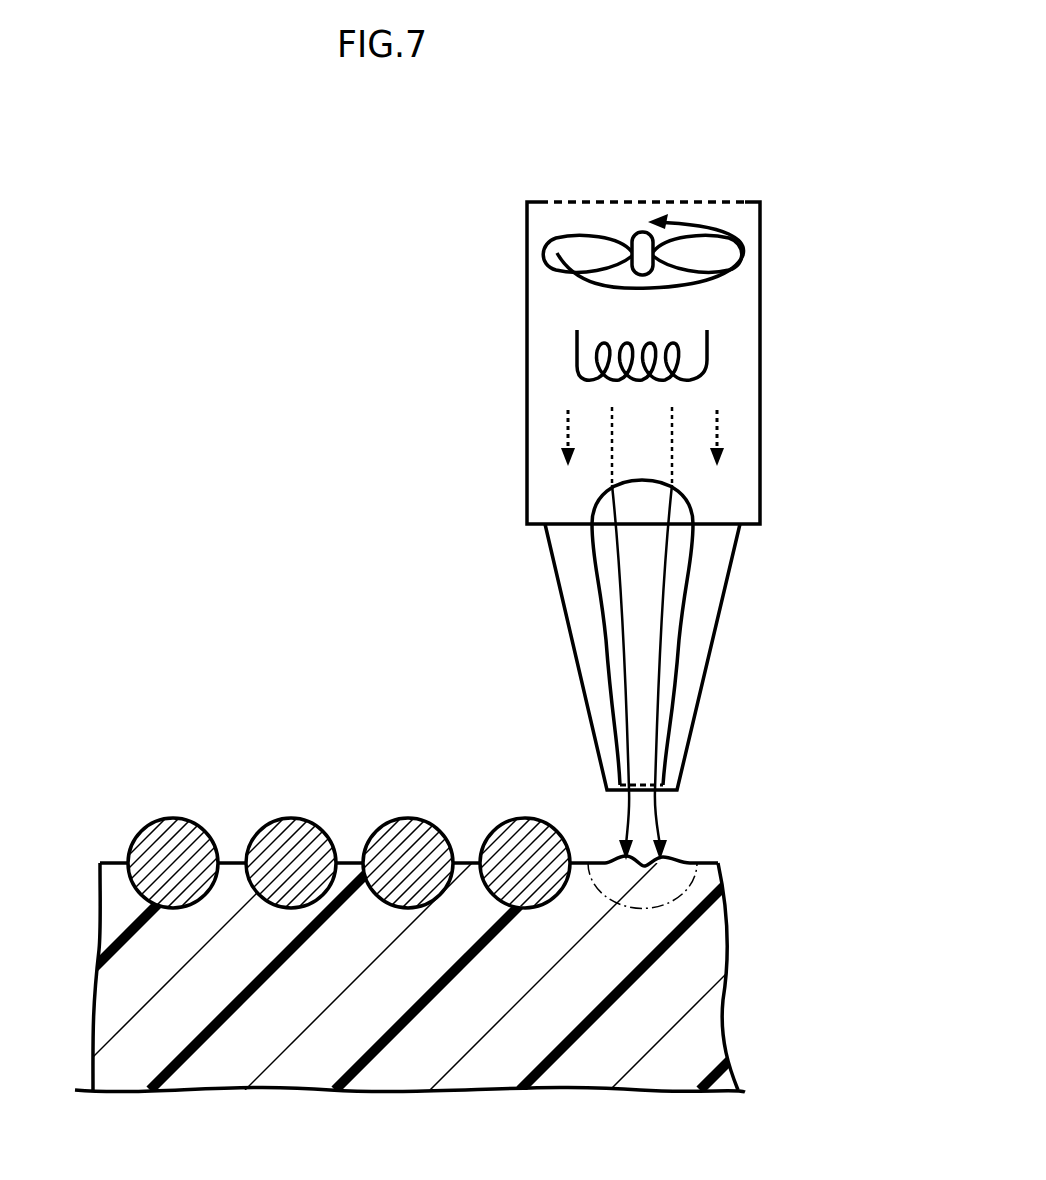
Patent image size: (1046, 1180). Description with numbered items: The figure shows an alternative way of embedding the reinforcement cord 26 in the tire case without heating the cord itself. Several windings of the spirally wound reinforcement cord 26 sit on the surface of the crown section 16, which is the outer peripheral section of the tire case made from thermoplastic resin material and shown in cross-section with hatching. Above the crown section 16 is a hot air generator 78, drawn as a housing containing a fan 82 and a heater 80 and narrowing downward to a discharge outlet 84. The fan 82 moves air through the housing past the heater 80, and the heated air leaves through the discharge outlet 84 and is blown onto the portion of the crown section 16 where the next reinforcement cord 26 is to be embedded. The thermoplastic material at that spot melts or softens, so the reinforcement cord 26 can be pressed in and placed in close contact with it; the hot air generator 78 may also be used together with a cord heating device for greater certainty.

The crown section 16 is at (109, 862).
The reinforcement cord 26 is at (180, 818).
The hot air generator 78 is at (586, 531).
The heater 80 is at (543, 265).
The fan 82 is at (577, 357).
The discharge outlet 84 is at (661, 797).